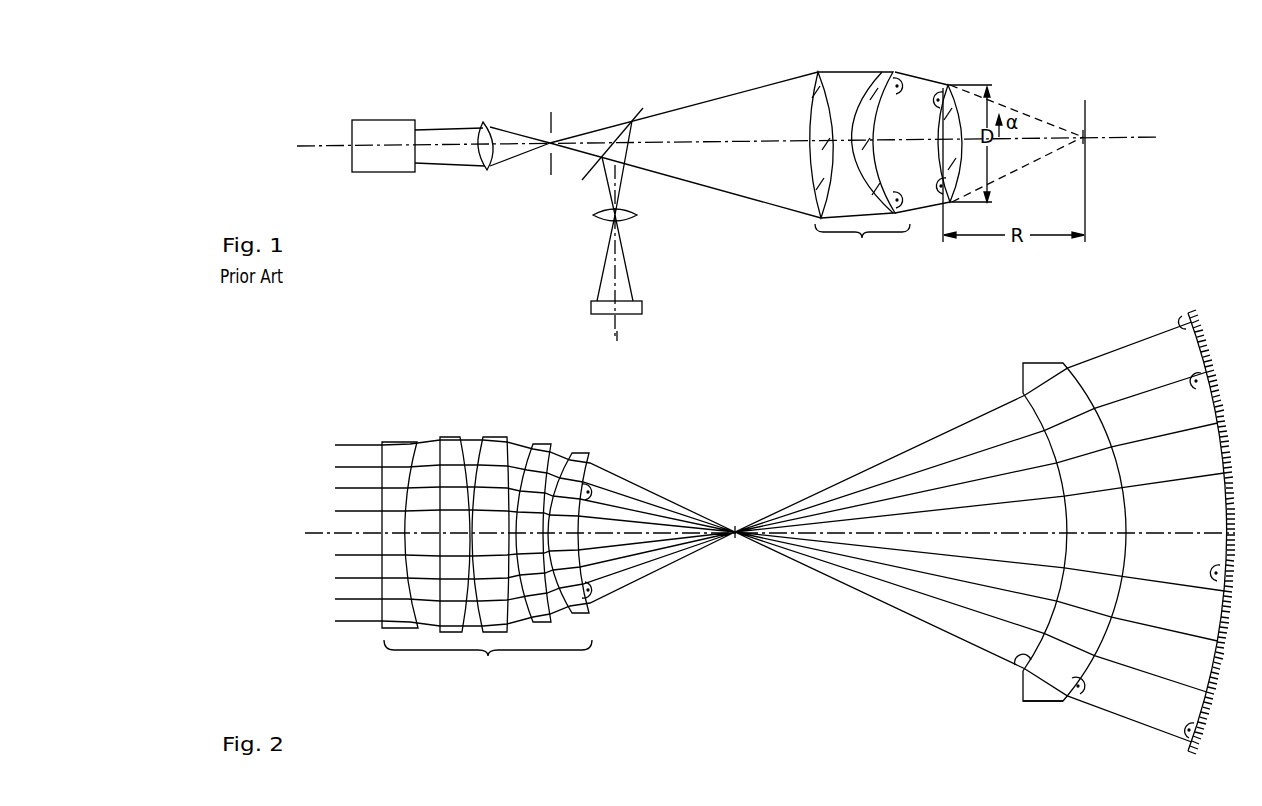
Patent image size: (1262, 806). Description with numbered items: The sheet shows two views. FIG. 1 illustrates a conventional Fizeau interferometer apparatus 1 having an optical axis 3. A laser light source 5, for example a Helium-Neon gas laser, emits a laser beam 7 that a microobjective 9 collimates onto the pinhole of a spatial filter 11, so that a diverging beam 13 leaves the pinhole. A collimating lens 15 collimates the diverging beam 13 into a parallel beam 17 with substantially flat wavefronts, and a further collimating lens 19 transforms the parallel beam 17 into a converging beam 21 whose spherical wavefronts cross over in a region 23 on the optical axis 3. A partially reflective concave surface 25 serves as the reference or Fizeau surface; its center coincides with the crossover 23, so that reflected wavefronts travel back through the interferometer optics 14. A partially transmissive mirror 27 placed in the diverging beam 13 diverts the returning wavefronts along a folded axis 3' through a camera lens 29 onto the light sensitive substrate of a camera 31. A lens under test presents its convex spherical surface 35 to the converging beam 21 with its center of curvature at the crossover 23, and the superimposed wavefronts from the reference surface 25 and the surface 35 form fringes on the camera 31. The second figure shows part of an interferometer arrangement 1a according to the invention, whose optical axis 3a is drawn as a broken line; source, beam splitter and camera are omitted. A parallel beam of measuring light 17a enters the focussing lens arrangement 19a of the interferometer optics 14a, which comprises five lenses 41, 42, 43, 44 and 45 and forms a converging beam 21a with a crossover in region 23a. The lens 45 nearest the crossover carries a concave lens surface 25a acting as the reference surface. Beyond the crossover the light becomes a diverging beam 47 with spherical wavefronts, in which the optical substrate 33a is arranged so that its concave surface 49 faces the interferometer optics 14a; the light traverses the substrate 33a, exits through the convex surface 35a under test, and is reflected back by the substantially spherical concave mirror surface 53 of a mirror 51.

In FIG. 1, the interferometer apparatus 1 is at (685, 72).
In FIG. 1, the optical axis 3 is at (728, 113).
In FIG. 1, the laser light source 5 is at (383, 120).
In FIG. 1, the laser beam 7 is at (432, 130).
In FIG. 1, the microobjective 9 is at (482, 168).
In FIG. 1, the spatial filter 11 is at (553, 118).
In FIG. 1, the diverging beam 13 is at (712, 100).
In FIG. 1, the interferometer optics 14 is at (842, 140).
In FIG. 1, the collimating lens 15 is at (814, 86).
In FIG. 1, the parallel beam 17 is at (842, 72).
In FIG. 1, the collimating lens 19 is at (885, 70).
In FIG. 1, the converging beam 21 is at (936, 196).
In FIG. 1, the crossover region 23 is at (1084, 134).
In FIG. 1, the concave surface 25 is at (899, 95).
In FIG. 1, the partially transmissive mirror 27 is at (641, 108).
In FIG. 1, the camera lens 29 is at (643, 218).
In FIG. 1, the camera 31 is at (642, 306).
In FIG. 1, the folded optical axis 3' is at (643, 259).
In FIG. 1, the convex spherical surface 35 is at (937, 97).
In FIG. 2, the interferometer arrangement 1a is at (752, 400).
In FIG. 2, the optical axis 3a is at (318, 528).
In FIG. 2, the interferometer optics 14a is at (434, 362).
In FIG. 2, the parallel beam of measuring light 17a is at (356, 625).
In FIG. 2, the focussing lens arrangement 19a is at (491, 525).
In FIG. 2, the converging beam 21a is at (657, 493).
In FIG. 2, the crossover region 23a is at (736, 528).
In FIG. 2, the concave lens surface 25a is at (594, 478).
In FIG. 2, the optical substrate 33a is at (1040, 701).
In FIG. 2, the convex surface 35a is at (1085, 693).
In FIG. 2, the lens 41 is at (394, 440).
In FIG. 2, the lens 42 is at (451, 437).
In FIG. 2, the lens 43 is at (494, 437).
In FIG. 2, the lens 44 is at (544, 444).
In FIG. 2, the lens 45 is at (582, 453).
In FIG. 2, the diverging beam 47 is at (897, 455).
In FIG. 2, the concave surface 49 is at (1018, 661).
In FIG. 2, the mirror 51 is at (1200, 338).
In FIG. 2, the concave mirror surface 53 is at (1184, 318).